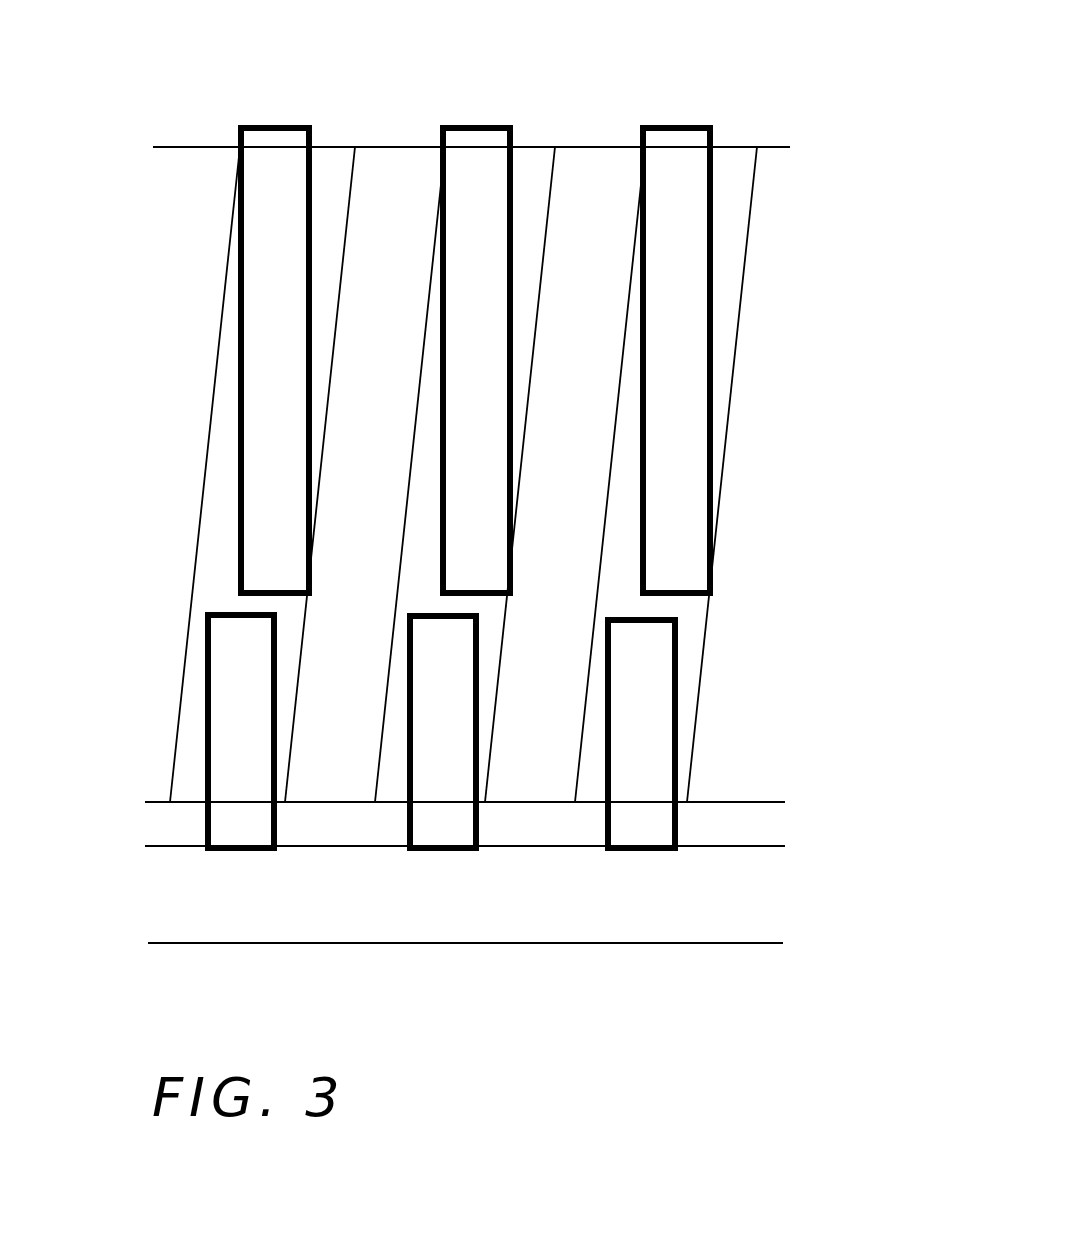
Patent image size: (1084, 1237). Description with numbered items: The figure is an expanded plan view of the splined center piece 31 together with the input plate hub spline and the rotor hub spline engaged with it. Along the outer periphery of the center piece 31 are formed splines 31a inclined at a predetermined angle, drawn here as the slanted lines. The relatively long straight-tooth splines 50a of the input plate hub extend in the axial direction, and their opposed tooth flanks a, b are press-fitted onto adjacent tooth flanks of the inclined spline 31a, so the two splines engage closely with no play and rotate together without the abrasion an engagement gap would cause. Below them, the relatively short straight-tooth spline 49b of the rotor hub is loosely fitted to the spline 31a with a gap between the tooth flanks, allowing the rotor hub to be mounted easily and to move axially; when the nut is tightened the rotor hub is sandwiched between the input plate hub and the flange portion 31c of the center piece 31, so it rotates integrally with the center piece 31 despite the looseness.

The center piece 31 is at (503, 439).
The splines 31a is at (749, 182).
The flange portion 31c is at (638, 925).
The straight-tooth splines 50a is at (690, 345).
The straight-tooth spline 49b is at (650, 707).
The tooth flank a is at (642, 160).
The tooth flank b is at (712, 594).